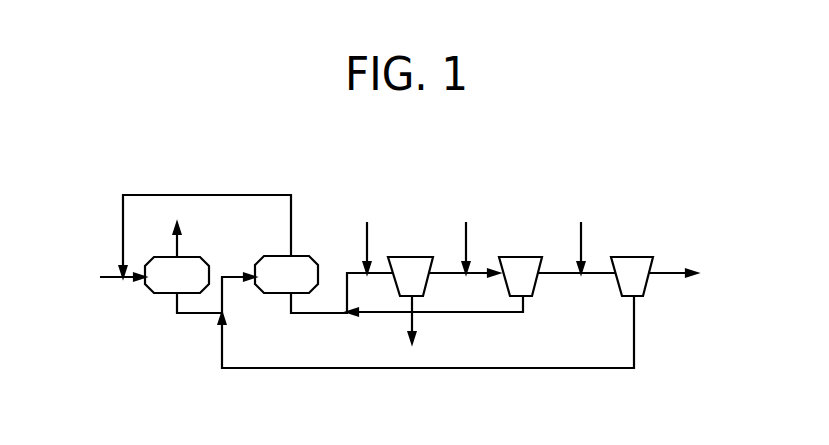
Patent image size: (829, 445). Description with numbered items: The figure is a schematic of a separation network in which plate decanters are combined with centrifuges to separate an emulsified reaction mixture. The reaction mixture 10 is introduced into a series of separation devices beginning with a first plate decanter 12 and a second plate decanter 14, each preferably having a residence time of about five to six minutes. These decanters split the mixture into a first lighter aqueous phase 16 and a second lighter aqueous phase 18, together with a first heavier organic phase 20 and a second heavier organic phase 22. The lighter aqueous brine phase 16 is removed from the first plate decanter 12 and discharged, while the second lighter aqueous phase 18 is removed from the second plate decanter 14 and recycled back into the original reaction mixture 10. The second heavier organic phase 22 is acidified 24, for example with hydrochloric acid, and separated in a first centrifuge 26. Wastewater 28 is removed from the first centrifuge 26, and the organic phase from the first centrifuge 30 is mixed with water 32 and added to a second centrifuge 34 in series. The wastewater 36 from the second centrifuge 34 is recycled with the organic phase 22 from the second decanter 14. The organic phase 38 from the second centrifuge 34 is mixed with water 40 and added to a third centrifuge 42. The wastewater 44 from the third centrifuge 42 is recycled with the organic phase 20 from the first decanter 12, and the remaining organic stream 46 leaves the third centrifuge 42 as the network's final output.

The reaction mixture 10 is at (122, 291).
The first plate decanter 12 is at (177, 275).
The second plate decanter 14 is at (286, 274).
The first lighter aqueous phase 16 is at (189, 232).
The second lighter aqueous phase 18 is at (217, 236).
The first heavier organic phase 20 is at (210, 308).
The second heavier organic phase 22 is at (337, 308).
The acidification 24 is at (367, 234).
The first centrifuge 26 is at (410, 276).
The wastewater 28 is at (427, 321).
The organic phase from the first centrifuge 30 is at (463, 286).
The water 32 is at (466, 234).
The second centrifuge 34 is at (520, 276).
The wastewater from the second centrifuge 36 is at (435, 315).
The organic phase from the second centrifuge 38 is at (576, 286).
The water 40 is at (581, 234).
The third centrifuge 42 is at (632, 276).
The wastewater from the third centrifuge 44 is at (439, 332).
The product stream 46 is at (673, 286).